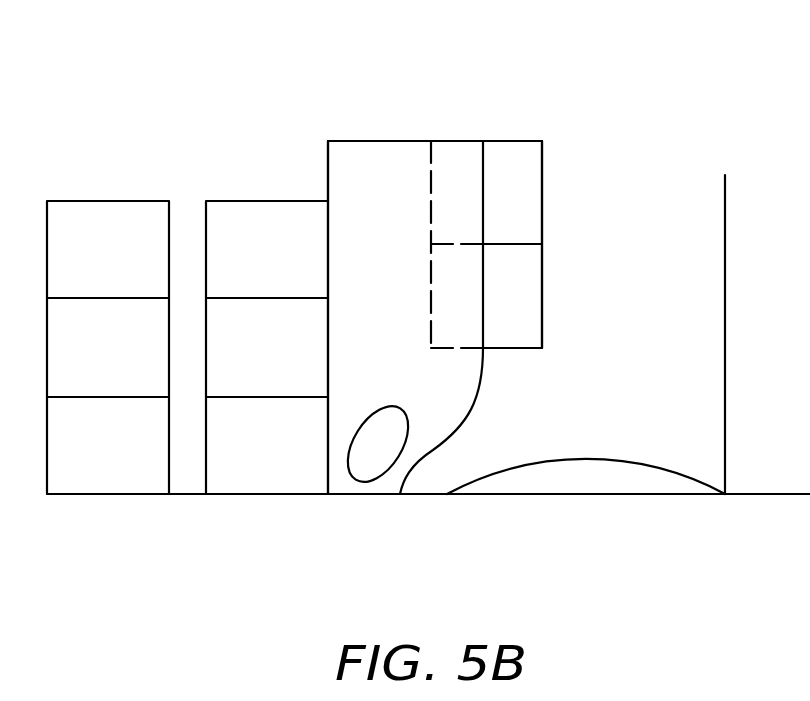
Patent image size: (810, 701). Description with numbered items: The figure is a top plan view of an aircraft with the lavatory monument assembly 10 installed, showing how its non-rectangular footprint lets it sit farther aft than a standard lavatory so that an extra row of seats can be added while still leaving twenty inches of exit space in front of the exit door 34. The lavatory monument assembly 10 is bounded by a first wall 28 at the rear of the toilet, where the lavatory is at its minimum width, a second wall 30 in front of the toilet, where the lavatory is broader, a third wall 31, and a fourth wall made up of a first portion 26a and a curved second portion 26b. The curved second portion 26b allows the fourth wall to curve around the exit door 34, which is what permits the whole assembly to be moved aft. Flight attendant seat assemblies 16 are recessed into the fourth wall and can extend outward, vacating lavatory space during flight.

The lavatory monument assembly 10 is at (412, 128).
The second wall 30 is at (347, 141).
The third wall 31 is at (327, 170).
The flight attendant seat assembly 16 is at (452, 167).
The first portion 26a is at (485, 157).
The second portion 26b is at (448, 438).
The first wall 28 is at (360, 494).
The exit door 34 is at (597, 480).